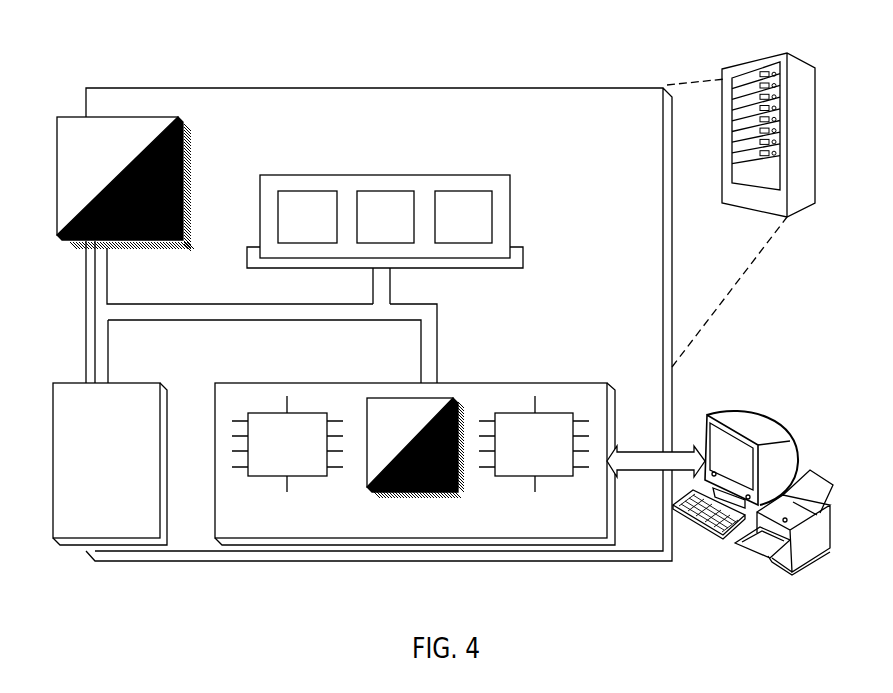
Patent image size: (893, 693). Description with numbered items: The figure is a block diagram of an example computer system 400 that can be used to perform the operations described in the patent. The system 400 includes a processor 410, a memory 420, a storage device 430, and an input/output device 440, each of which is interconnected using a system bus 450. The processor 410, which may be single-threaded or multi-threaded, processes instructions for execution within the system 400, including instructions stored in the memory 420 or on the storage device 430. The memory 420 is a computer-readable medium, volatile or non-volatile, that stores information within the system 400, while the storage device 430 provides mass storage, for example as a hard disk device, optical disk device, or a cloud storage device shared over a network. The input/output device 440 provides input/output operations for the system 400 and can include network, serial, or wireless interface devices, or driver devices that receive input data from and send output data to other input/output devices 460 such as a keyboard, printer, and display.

The computer system 400 is at (86, 57).
The processor 410 is at (170, 231).
The memory 420 is at (512, 218).
The storage device 430 is at (140, 531).
The input/output device 440 is at (574, 383).
The system bus 450 is at (263, 320).
The input/output devices 460 is at (788, 432).